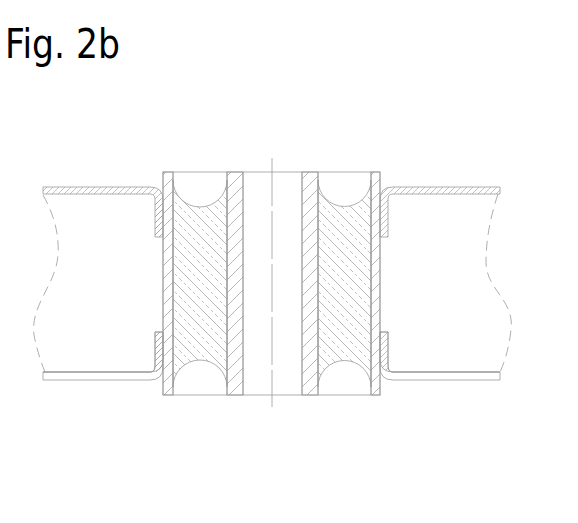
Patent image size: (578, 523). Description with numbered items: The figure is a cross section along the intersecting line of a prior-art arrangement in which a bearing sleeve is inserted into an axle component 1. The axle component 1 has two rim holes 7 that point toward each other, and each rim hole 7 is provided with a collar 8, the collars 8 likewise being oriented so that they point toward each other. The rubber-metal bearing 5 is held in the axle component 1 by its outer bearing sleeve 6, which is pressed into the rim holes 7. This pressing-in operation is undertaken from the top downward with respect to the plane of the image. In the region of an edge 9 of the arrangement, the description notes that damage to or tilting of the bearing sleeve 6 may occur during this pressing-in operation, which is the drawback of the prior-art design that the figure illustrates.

The axle component 1 is at (85, 186).
The rubber-metal bearing 5 is at (253, 163).
The outer bearing sleeve 6 is at (167, 397).
The rim hole 7 is at (156, 221).
The collar 8 is at (388, 220).
The edge 9 is at (382, 328).